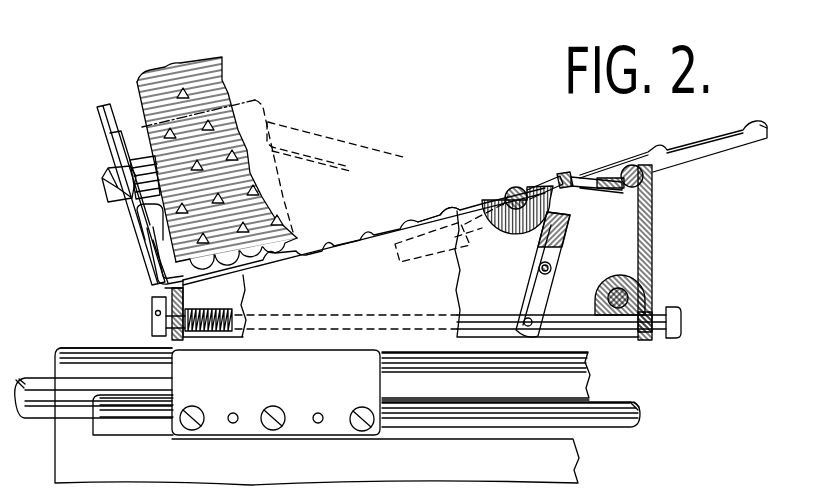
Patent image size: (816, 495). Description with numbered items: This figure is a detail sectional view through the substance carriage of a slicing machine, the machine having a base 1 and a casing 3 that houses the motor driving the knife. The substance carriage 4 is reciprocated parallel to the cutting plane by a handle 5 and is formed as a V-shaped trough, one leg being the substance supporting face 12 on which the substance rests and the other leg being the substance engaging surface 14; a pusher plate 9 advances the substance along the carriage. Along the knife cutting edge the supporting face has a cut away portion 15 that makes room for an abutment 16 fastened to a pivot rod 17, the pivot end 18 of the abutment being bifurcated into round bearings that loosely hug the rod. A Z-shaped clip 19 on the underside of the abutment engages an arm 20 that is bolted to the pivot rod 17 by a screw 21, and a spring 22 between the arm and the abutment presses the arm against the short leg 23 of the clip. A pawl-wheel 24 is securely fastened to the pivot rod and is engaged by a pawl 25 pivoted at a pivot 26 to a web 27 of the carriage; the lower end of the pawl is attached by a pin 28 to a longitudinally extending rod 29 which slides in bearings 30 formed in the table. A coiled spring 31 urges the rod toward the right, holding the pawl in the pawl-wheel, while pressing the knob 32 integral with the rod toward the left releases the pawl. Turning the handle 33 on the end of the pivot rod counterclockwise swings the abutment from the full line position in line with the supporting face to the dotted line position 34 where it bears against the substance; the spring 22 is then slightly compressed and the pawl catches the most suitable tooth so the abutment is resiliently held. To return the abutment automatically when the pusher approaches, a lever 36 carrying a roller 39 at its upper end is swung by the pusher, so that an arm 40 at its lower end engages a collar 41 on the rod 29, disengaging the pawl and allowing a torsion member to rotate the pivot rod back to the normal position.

The slicing machine base 1 is at (77, 467).
The casing 3 is at (97, 40).
The substance carriage 4 is at (335, 243).
The handle 5 is at (253, 94).
The pusher plate 9 is at (178, 72).
The substance supporting face 12 is at (376, 236).
The substance engaging surface 14 is at (148, 222).
The cut away portion 15 is at (505, 192).
The abutment 16 is at (350, 140).
The pivot rod 17 is at (530, 189).
The pivot end 18 is at (514, 187).
The Z-shaped clip 19 is at (585, 182).
The arm 20 is at (566, 204).
The screw 21 is at (453, 243).
The spring 22 is at (567, 180).
The short leg 23 is at (580, 189).
The pawl-wheel 24 is at (552, 240).
The pawl 25 is at (533, 284).
The pivot 26 is at (539, 268).
The web 27 is at (560, 322).
The pin 28 is at (527, 332).
The rod 29 is at (310, 345).
The bearings 30 is at (185, 299).
The coiled spring 31 is at (200, 332).
The knob 32 is at (682, 318).
The handle 33 is at (398, 252).
The dotted line position 34 is at (313, 130).
The lever 36 is at (160, 290).
The roller 39 is at (118, 185).
The arm 40 is at (165, 292).
The collar 41 is at (152, 305).